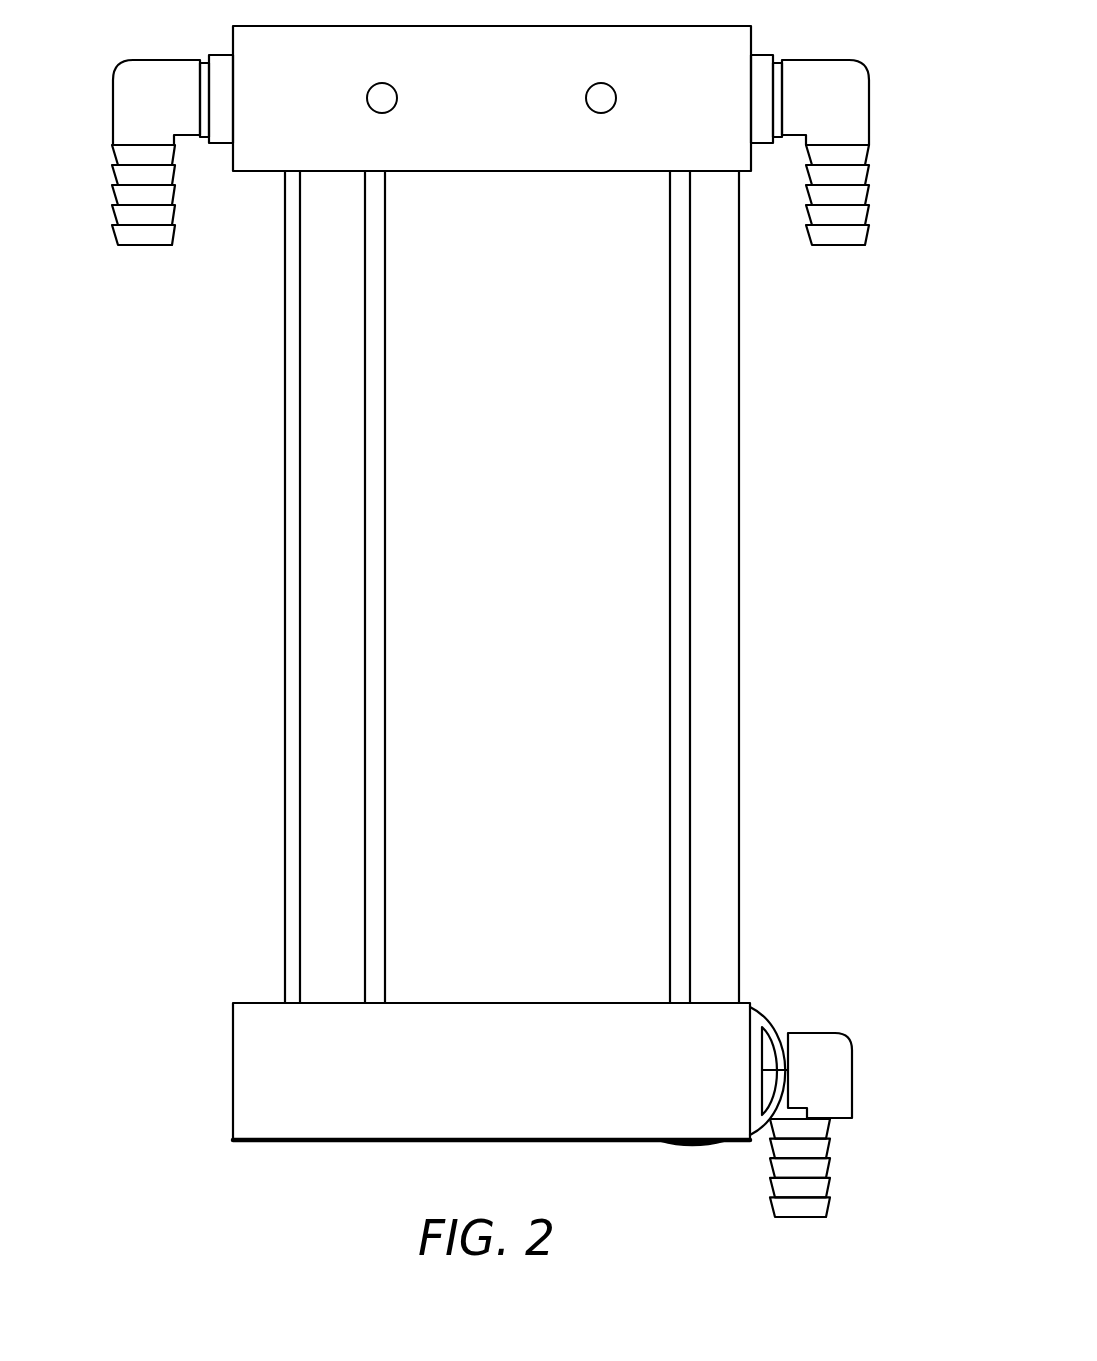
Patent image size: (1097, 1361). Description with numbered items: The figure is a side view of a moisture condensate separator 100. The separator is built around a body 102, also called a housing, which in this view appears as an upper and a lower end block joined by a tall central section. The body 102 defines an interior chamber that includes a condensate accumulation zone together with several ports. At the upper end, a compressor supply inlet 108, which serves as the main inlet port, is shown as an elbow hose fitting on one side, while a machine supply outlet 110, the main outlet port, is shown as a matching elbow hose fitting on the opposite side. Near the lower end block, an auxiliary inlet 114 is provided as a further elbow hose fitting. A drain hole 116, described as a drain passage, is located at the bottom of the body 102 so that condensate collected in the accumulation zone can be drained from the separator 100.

The moisture condensate separator 100 is at (872, 47).
The body 102 is at (320, 627).
The compressor supply inlet 108 is at (143, 245).
The machine supply outlet 110 is at (838, 245).
The auxiliary inlet 114 is at (802, 1217).
The drain hole 116 is at (407, 1141).